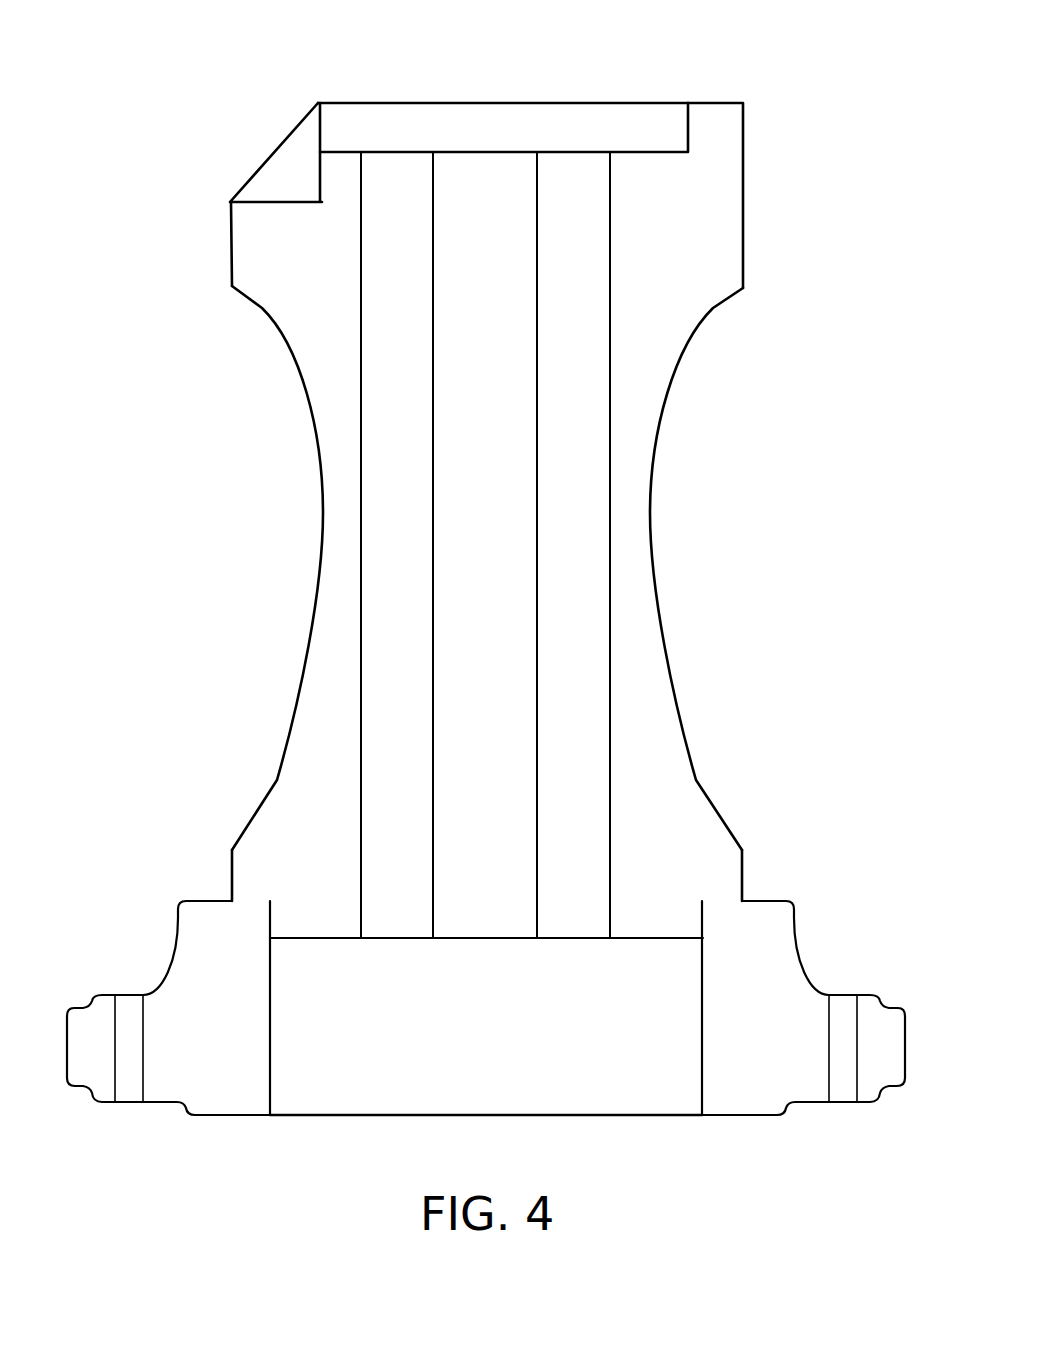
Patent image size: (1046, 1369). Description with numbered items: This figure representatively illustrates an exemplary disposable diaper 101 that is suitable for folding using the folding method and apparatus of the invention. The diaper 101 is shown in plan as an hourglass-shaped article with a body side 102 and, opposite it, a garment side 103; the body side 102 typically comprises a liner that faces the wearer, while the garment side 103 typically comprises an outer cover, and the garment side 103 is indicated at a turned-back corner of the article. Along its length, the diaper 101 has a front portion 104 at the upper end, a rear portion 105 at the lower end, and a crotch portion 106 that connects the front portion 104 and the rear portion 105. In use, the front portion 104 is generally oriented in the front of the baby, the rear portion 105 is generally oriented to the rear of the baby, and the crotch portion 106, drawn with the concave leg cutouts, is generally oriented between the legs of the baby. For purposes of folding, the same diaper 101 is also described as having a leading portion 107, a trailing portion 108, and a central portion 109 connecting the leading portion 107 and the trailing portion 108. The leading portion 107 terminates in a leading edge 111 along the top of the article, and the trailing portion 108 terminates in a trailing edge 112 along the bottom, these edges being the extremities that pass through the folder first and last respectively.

The diaper 101 is at (770, 60).
The body side 102 is at (507, 489).
The garment side 103 is at (307, 189).
The front portion 104 is at (778, 228).
The rear portion 105 is at (837, 894).
The crotch portion 106 is at (693, 581).
The leading portion 107 is at (187, 251).
The trailing portion 108 is at (120, 960).
The central portion 109 is at (244, 596).
The leading edge 111 is at (573, 103).
The trailing edge 112 is at (356, 1117).